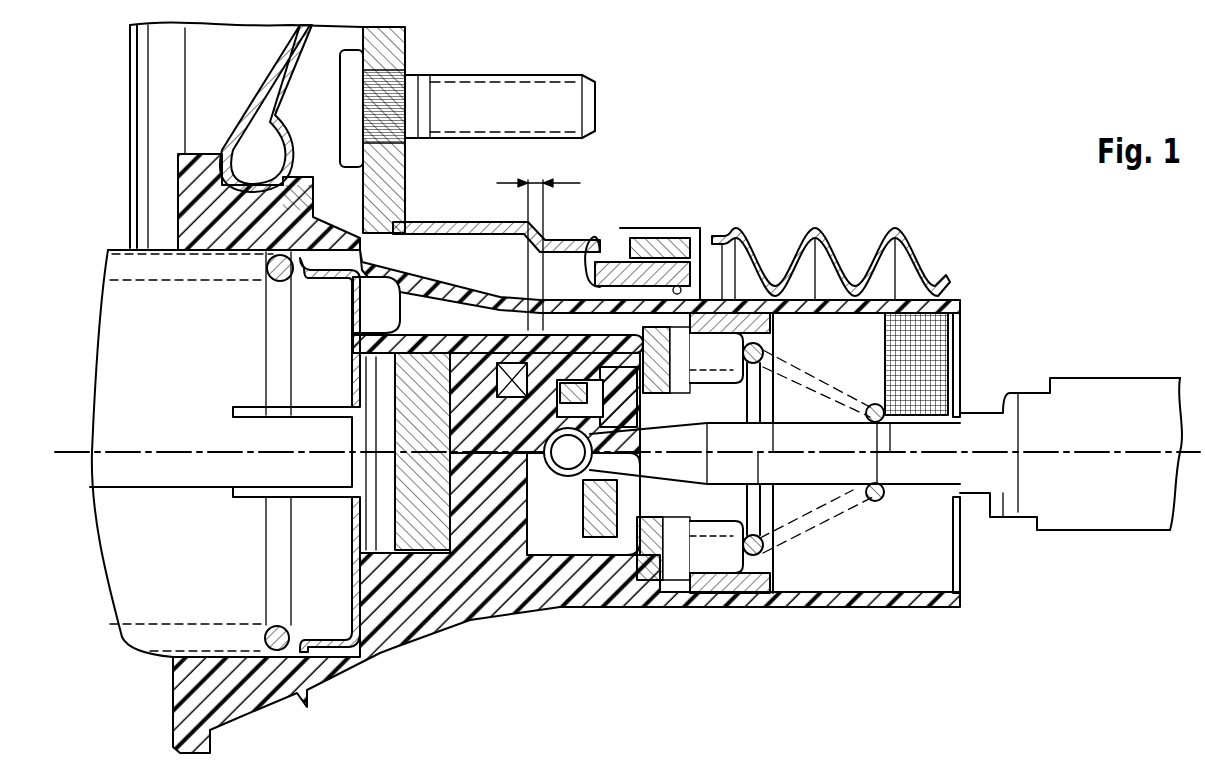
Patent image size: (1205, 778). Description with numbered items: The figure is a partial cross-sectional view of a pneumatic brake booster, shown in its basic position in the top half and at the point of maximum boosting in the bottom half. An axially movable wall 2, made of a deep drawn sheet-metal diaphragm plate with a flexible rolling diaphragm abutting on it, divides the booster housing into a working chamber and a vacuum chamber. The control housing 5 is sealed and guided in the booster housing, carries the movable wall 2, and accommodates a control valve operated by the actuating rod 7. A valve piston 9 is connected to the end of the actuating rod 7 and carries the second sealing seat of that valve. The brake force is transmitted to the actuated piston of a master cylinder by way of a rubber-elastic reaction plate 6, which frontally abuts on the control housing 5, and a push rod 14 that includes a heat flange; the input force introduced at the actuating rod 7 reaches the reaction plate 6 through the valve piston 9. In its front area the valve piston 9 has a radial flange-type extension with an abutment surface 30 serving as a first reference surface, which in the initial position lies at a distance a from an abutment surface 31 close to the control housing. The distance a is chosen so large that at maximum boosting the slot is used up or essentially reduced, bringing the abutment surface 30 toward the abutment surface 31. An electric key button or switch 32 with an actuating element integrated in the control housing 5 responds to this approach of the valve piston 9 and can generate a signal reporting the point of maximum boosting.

The axially movable wall 2 is at (238, 105).
The control housing 5 is at (708, 318).
The reaction plate 6 is at (420, 397).
The actuating rod 7 is at (1134, 412).
The valve piston 9 is at (487, 483).
The push rod 14 is at (160, 463).
The abutment surface 30 is at (597, 255).
The abutment surface 31 is at (527, 350).
The electric key button or switch 32 is at (487, 355).
The distance a is at (538, 243).